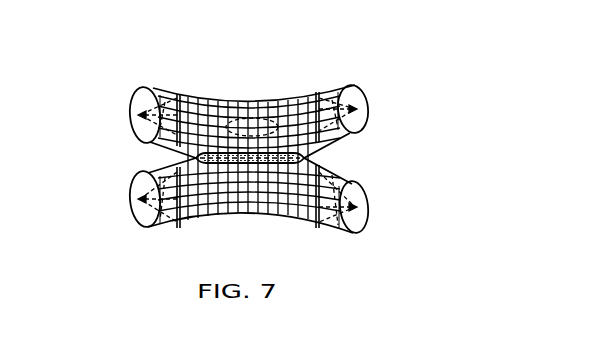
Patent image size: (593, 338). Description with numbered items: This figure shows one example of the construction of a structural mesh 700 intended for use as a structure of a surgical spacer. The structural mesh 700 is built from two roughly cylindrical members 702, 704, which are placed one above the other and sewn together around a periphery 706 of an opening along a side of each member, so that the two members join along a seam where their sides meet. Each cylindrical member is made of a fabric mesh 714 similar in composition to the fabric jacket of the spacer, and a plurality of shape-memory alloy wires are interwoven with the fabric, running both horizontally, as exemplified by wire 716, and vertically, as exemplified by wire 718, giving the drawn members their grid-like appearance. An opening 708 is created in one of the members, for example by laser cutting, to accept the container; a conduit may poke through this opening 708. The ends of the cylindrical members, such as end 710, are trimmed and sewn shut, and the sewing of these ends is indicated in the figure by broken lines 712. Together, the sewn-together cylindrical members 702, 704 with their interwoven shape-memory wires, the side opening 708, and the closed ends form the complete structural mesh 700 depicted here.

The structural mesh 700 is at (398, 58).
The cylindrical member 702 is at (197, 120).
The cylindrical member 704 is at (244, 211).
The periphery 706 is at (322, 163).
The opening 708 is at (254, 118).
The end 710 is at (118, 106).
The lines 712 is at (175, 102).
The fabric mesh 714 is at (207, 193).
The wire 716 is at (304, 156).
The wire 718 is at (300, 100).